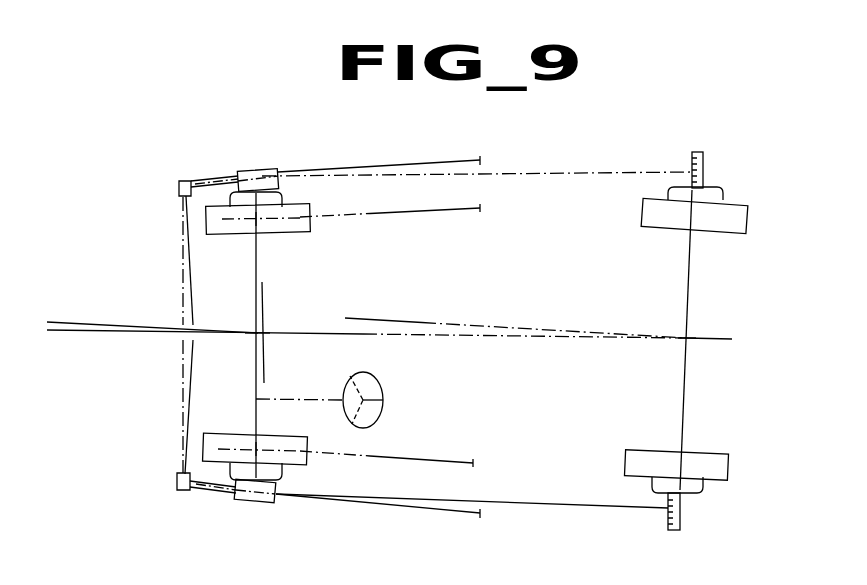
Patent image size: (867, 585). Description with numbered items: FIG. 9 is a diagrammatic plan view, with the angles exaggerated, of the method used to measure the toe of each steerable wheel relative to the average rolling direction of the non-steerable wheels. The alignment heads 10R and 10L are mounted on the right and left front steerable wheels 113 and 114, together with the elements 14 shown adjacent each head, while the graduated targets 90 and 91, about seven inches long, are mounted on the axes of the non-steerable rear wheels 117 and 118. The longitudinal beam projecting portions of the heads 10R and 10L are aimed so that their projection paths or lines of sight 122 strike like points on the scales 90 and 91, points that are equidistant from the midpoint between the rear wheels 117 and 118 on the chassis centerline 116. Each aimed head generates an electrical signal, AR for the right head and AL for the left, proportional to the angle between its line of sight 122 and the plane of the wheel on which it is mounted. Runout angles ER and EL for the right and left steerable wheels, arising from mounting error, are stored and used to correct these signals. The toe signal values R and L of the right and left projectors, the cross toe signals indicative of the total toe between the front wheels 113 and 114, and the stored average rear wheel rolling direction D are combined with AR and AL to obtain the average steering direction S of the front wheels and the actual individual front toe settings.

The mounting bracket 14 is at (236, 200).
The right alignment head 10R is at (358, 157).
The left alignment head 10L is at (357, 529).
The right front steerable wheel 113 is at (363, 213).
The left front steerable wheel 114 is at (360, 456).
The chassis centerline 116 is at (443, 337).
The right non-steerable rear wheel 117 is at (647, 228).
The left non-steerable rear wheel 118 is at (642, 456).
The graduated target scale 90 is at (705, 162).
The graduated target scale 91 is at (682, 518).
The projected beam path 122 is at (513, 543).
The average steering direction S is at (57, 352).
The toe signal value of right projector R is at (222, 289).
The toe signal value of left projector L is at (223, 376).
The average rear wheel rolling direction D is at (363, 372).
The right aimable sight signal value AR is at (408, 197).
The right runout value ER is at (478, 163).
The left aimable sight signal value AL is at (405, 476).
The left runout value EL is at (472, 503).